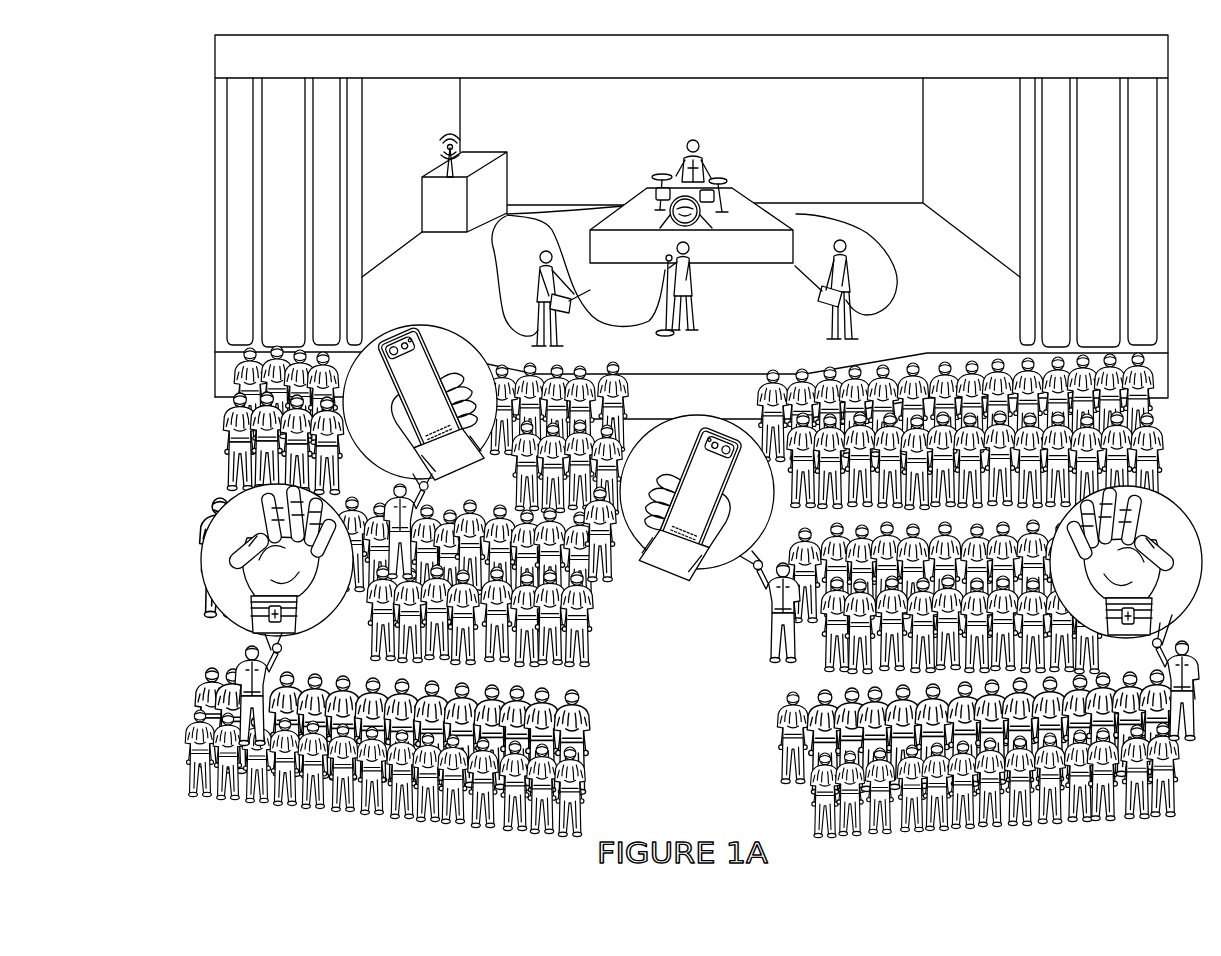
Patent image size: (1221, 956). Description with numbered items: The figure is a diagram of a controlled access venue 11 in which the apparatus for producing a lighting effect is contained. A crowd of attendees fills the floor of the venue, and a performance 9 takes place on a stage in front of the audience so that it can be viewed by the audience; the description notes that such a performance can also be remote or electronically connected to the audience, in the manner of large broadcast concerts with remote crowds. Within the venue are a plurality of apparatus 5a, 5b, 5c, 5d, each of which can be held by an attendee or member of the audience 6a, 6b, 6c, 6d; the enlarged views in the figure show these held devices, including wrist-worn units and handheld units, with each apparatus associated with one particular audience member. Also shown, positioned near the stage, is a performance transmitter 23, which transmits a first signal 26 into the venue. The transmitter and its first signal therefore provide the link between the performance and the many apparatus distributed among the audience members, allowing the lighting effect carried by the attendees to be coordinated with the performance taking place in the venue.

The performance 9 is at (833, 155).
The controlled access venue 11 is at (163, 35).
The performance transmitter 23 is at (503, 167).
The first signal 26 is at (441, 151).
The apparatus 5a is at (307, 603).
The apparatus 5b is at (428, 375).
The apparatus 5c is at (703, 471).
The apparatus 5d is at (1103, 613).
The member of the audience 6a is at (241, 652).
The member of the audience 6b is at (393, 455).
The member of the audience 6c is at (774, 603).
The member of the audience 6d is at (1191, 658).